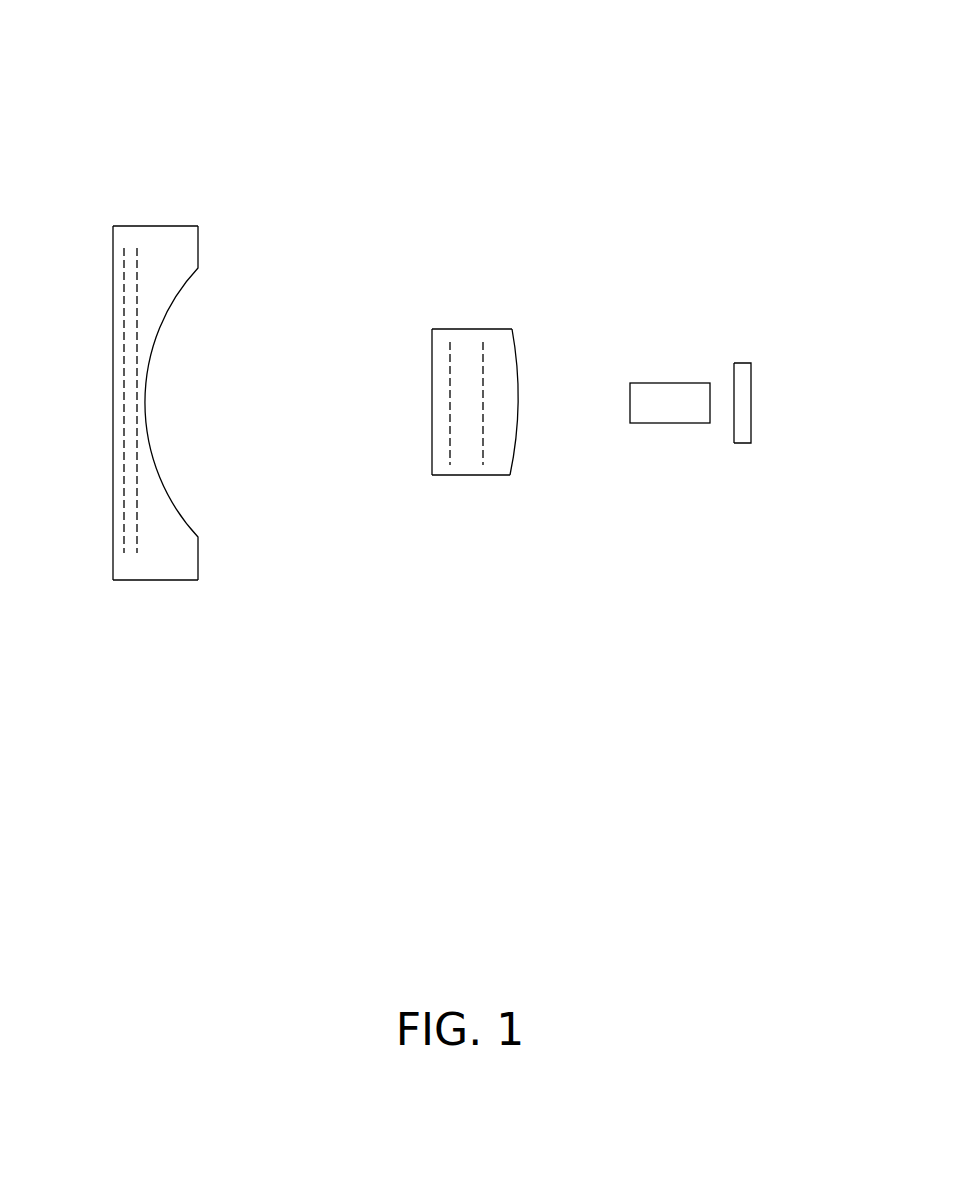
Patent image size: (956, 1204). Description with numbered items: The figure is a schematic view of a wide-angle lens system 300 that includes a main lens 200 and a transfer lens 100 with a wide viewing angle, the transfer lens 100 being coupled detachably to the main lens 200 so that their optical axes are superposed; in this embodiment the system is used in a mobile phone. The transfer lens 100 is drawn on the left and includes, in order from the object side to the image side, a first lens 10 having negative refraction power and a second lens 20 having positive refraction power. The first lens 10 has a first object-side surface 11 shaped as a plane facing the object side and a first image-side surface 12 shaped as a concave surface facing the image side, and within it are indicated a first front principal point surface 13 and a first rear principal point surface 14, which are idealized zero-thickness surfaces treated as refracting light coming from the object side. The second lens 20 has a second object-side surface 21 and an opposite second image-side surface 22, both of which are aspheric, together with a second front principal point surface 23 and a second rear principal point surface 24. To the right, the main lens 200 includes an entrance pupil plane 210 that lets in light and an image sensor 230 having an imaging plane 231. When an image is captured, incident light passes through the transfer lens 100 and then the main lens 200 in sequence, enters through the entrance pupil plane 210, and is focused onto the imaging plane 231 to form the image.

The wide-angle lens system 300 is at (281, 68).
The transfer lens 100 is at (168, 124).
The main lens 200 is at (677, 323).
The first lens 10 is at (150, 247).
The first object-side surface 11 is at (113, 523).
The first image-side surface 12 is at (152, 456).
The first front principal point surface 13 is at (124, 288).
The first rear principal point surface 14 is at (137, 326).
The second lens 20 is at (467, 345).
The second object-side surface 21 is at (432, 417).
The second image-side surface 22 is at (518, 417).
The second front principal point surface 23 is at (450, 388).
The second rear principal point surface 24 is at (483, 437).
The entrance pupil plane 210 is at (630, 400).
The image sensor 230 is at (740, 385).
The imaging plane 231 is at (734, 420).